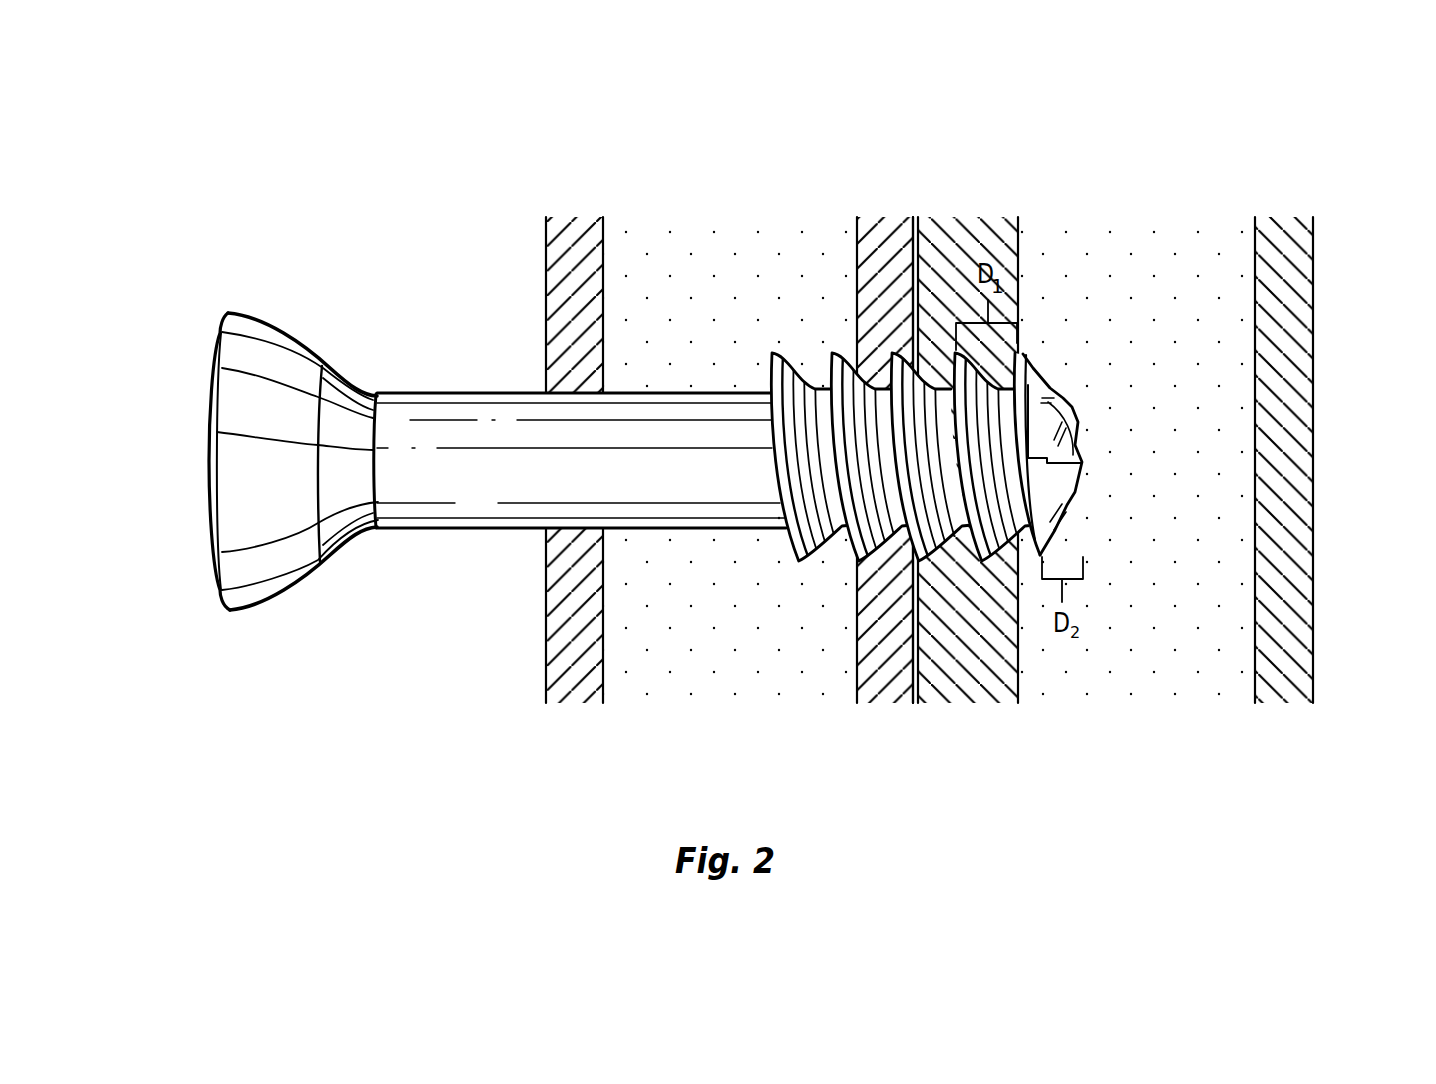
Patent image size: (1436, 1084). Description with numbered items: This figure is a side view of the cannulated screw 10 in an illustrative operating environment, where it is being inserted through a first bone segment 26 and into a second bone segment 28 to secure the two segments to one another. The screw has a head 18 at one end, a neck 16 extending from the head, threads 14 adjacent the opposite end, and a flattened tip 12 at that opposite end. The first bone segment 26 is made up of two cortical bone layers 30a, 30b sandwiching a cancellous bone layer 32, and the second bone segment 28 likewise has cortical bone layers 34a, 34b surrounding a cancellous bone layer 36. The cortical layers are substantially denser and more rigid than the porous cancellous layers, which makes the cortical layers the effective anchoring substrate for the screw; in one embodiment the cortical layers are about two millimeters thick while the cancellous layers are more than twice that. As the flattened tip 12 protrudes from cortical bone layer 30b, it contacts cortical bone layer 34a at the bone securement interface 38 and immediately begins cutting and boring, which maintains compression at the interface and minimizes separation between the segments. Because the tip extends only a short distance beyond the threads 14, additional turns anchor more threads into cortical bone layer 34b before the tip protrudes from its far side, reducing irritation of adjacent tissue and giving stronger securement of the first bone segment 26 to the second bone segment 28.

The cannulated screw 10 is at (456, 278).
The flattened tip 12 is at (1086, 395).
The threads 14 is at (814, 342).
The neck 16 is at (443, 400).
The head 18 is at (266, 327).
The first bone segment 26 is at (659, 200).
The second bone segment 28 is at (1069, 196).
The cortical bone layer 30a is at (565, 218).
The cortical bone layer 30b is at (878, 218).
The cancellous bone layer 32 is at (705, 218).
The cortical bone layer 34a is at (970, 218).
The cortical bone layer 34b is at (1285, 218).
The cancellous bone layer 36 is at (1165, 218).
The bone securement interface 38 is at (917, 205).